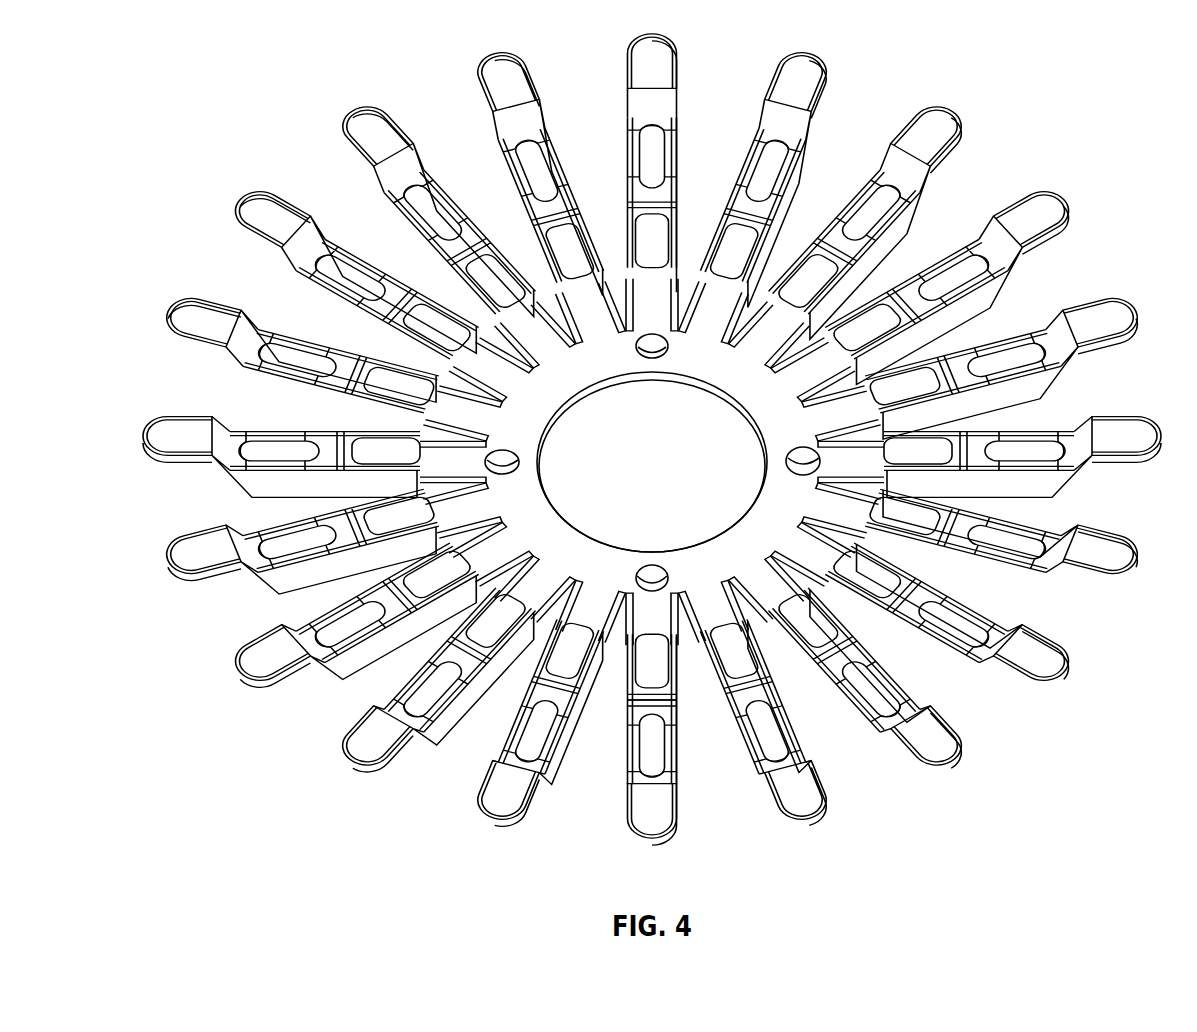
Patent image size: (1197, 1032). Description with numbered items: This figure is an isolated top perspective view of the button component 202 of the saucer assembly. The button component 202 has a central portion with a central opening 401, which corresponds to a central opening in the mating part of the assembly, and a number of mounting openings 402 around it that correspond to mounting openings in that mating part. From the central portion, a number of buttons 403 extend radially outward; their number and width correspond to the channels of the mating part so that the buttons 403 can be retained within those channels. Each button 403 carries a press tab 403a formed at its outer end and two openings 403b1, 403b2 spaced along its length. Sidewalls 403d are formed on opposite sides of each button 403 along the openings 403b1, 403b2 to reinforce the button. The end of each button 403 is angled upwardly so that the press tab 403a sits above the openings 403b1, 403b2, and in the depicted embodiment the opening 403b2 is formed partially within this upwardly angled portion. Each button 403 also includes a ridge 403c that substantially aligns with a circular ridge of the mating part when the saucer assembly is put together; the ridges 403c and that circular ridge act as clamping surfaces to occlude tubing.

The button component 202 is at (362, 46).
The central opening 401 is at (614, 382).
The mounting openings 402 is at (653, 360).
The buttons 403 is at (1115, 585).
The press tab 403a is at (640, 834).
The first opening 403b1 is at (645, 675).
The second opening 403b2 is at (675, 778).
The ridge 403c is at (657, 707).
The sidewalls 403d is at (713, 637).